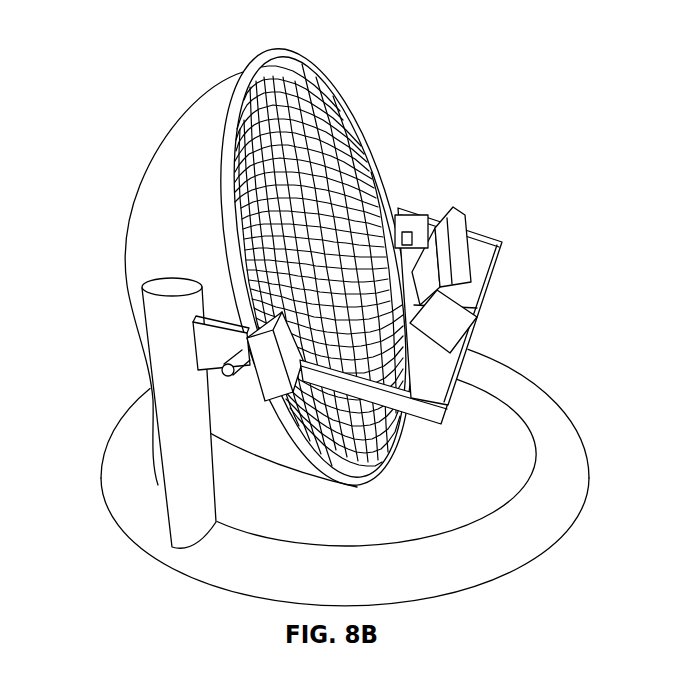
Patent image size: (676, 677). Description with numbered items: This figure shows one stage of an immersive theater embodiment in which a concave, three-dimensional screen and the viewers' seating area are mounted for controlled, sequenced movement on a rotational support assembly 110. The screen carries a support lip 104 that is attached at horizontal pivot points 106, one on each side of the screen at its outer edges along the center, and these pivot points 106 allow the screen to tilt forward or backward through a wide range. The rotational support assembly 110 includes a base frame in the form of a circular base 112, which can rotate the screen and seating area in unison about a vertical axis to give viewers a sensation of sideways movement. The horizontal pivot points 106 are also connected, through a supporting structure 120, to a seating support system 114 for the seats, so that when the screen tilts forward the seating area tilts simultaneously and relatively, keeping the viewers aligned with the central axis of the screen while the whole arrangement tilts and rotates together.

The support lip 104 is at (238, 65).
The horizontal pivot points 106 is at (221, 354).
The rotational support assembly 110 is at (315, 315).
The circular base 112 is at (532, 543).
The seating support system 114 is at (483, 312).
The supporting structure 120 is at (447, 407).